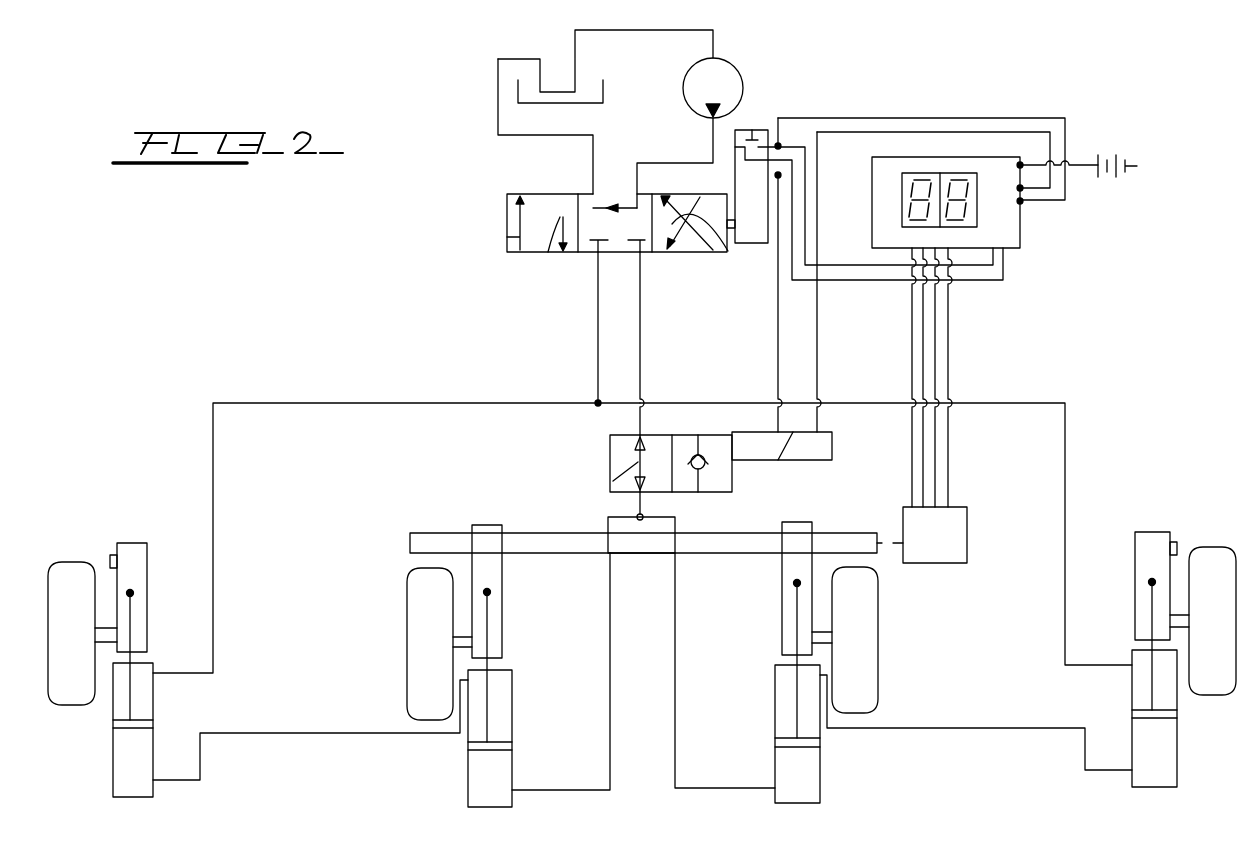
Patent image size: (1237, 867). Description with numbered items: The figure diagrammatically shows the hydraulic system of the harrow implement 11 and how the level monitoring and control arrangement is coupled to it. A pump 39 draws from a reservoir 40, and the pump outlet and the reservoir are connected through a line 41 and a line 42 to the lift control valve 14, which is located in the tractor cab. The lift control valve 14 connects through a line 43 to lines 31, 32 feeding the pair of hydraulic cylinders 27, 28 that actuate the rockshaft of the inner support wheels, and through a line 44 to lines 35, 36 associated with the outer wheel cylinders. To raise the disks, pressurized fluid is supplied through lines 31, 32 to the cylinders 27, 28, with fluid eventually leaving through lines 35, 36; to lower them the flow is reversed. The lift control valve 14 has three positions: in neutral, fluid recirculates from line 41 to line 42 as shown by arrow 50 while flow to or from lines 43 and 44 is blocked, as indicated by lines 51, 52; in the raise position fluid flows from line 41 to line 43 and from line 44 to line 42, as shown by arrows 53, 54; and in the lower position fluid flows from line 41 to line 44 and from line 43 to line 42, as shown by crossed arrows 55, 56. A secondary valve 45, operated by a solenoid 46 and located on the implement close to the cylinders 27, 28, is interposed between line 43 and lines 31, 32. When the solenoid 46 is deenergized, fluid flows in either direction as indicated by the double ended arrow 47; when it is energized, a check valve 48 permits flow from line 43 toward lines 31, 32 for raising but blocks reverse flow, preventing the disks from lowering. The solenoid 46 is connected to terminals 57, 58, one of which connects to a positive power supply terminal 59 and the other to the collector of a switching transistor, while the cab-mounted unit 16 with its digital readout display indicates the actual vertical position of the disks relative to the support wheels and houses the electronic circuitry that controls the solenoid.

The harrow implement 11 is at (456, 521).
The lift control valve 14 is at (518, 253).
The unit 16 is at (892, 157).
The hydraulic cylinder 27 is at (775, 753).
The hydraulic cylinder 28 is at (508, 765).
The line 31 is at (677, 640).
The line 32 is at (612, 637).
The line 35 is at (290, 403).
The line 36 is at (1025, 403).
The pump 39 is at (743, 88).
The reservoir 40 is at (603, 95).
The line 41 is at (655, 161).
The line 42 is at (518, 136).
The line 43 is at (642, 362).
The line 44 is at (597, 330).
The secondary valve 45 is at (610, 443).
The solenoid 46 is at (803, 460).
The double ended arrow 47 is at (613, 481).
The check valve 48 is at (705, 468).
The arrow 50 is at (606, 203).
The line 51 is at (642, 243).
The line 52 is at (597, 243).
The arrow 53 is at (548, 252).
The arrow 54 is at (507, 237).
The crossed arrow 55 is at (685, 238).
The crossed arrow 56 is at (728, 252).
The terminal 57 is at (1021, 190).
The terminal 58 is at (1021, 203).
The positive power supply terminal 59 is at (1022, 162).